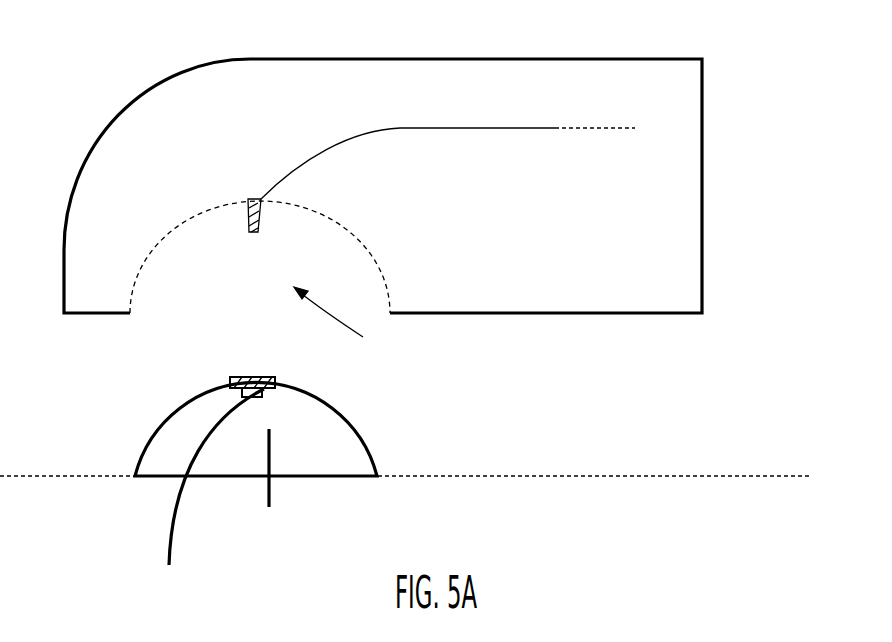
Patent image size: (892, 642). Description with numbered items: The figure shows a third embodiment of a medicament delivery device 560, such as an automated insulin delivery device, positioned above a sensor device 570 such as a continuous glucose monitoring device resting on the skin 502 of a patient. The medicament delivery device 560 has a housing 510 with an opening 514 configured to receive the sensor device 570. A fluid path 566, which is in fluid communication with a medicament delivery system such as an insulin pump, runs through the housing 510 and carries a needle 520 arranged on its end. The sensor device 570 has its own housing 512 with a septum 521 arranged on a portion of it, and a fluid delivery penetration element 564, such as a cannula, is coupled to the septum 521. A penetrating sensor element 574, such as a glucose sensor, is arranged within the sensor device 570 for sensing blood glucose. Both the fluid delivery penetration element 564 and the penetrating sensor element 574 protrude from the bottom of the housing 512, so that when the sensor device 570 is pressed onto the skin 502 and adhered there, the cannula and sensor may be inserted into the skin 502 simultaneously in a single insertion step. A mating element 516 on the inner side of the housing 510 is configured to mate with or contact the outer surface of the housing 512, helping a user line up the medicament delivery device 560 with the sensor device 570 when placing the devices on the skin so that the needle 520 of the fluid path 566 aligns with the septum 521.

The skin 502 is at (778, 475).
The housing 510 is at (668, 57).
The housing 512 is at (330, 412).
The opening 514 is at (338, 327).
The mating element 516 is at (200, 221).
The needle 520 is at (262, 215).
The septum 521 is at (235, 376).
The medicament delivery device 560 is at (643, 296).
The fluid delivery penetration element 564 is at (170, 548).
The fluid path 566 is at (414, 128).
The sensor device 570 is at (345, 467).
The penetrating sensor element 574 is at (269, 507).